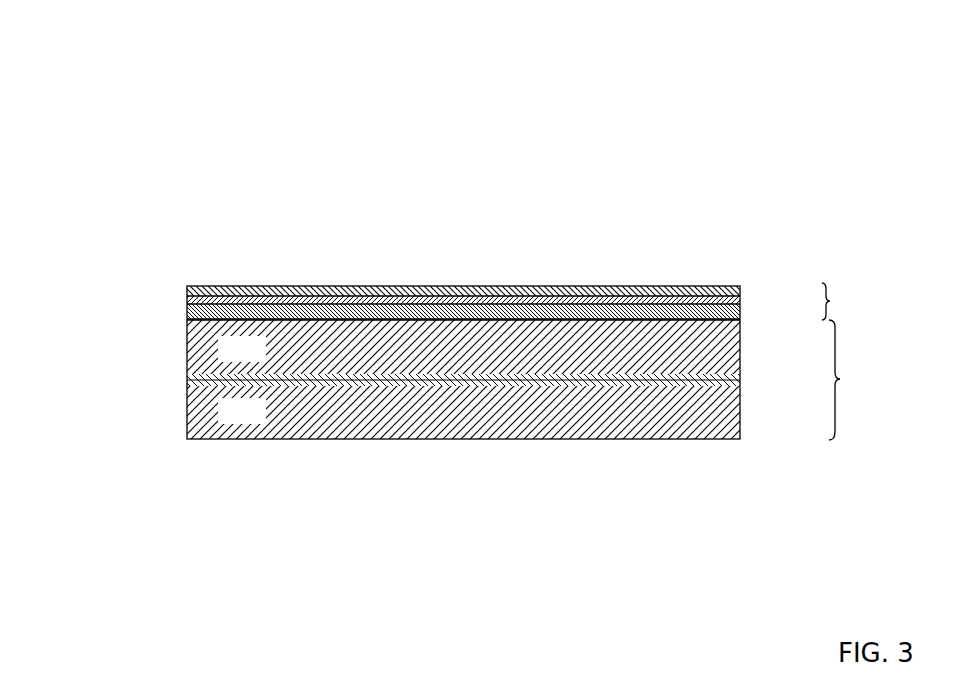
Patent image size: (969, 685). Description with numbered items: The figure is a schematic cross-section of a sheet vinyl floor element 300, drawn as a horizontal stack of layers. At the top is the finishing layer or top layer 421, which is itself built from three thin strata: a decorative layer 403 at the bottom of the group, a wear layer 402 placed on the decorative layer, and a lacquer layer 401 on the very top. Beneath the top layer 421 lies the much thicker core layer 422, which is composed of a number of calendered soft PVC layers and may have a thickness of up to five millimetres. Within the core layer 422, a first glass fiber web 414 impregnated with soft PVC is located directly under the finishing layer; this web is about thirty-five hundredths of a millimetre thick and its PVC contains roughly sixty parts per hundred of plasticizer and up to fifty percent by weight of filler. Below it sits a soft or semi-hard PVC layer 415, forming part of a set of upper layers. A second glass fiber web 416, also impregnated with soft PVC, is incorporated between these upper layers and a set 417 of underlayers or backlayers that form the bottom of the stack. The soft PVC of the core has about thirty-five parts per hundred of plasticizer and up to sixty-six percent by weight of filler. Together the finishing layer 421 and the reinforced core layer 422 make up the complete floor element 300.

The floor element 300 is at (150, 82).
The lacquer layer 401 is at (742, 287).
The wear layer 402 is at (742, 302).
The decorative layer 403 is at (742, 316).
The first glass fiber web 414 is at (187, 320).
The soft or semi-hard PVC layer 415 is at (260, 359).
The glass fiber web 416 is at (187, 380).
The set of underlayers or backlayers 417 is at (260, 420).
The top layer or finishing layer 421 is at (843, 301).
The core layer 422 is at (854, 380).